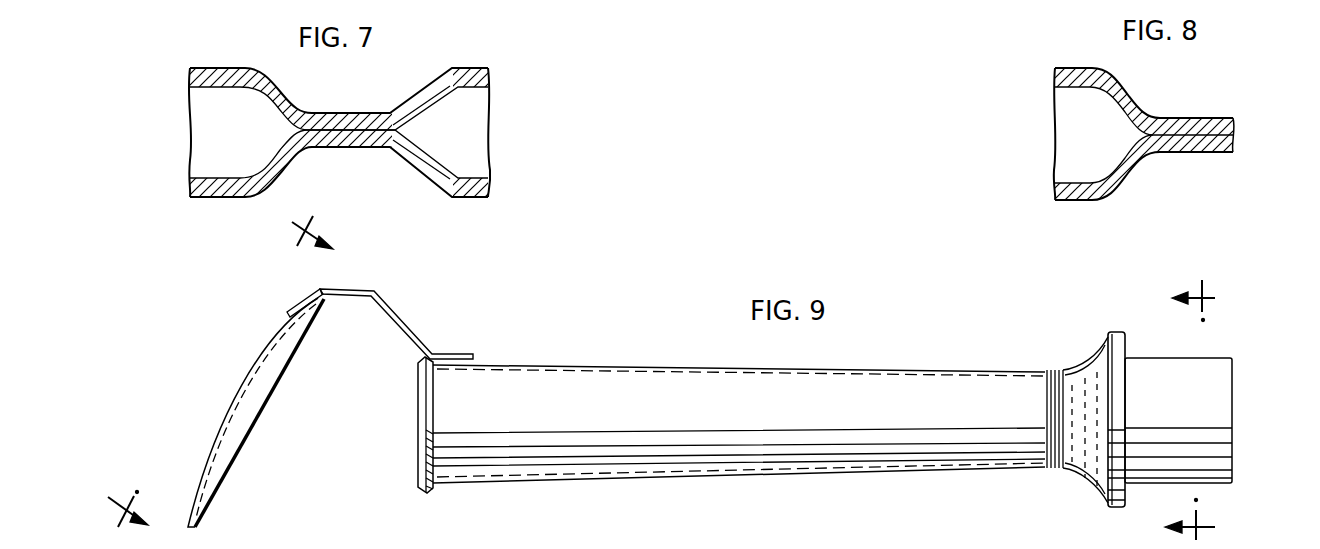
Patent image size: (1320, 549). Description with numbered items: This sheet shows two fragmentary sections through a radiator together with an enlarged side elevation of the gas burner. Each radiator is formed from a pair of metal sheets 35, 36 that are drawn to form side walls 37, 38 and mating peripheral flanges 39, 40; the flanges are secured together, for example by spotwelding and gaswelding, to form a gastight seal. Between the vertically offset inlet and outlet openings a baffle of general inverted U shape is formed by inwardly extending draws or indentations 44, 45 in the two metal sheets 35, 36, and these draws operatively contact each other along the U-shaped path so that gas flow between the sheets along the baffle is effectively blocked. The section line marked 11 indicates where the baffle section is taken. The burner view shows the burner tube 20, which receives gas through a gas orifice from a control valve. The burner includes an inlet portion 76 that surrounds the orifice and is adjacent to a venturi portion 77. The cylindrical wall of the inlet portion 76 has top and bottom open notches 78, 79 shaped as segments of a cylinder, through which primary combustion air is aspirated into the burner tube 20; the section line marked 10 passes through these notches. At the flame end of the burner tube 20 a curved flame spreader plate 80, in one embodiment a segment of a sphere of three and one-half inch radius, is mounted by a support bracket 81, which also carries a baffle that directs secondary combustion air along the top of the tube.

In FIG. 9, the burner tube 20 is at (781, 460).
In FIG. 7, the metal sheet 35 is at (470, 68).
In FIG. 8, the metal sheet 35 is at (1078, 68).
In FIG. 7, the metal sheet 36 is at (462, 190).
In FIG. 8, the metal sheet 36 is at (1070, 200).
In FIG. 8, the side wall 37 is at (1125, 90).
In FIG. 8, the side wall 38 is at (1134, 170).
In FIG. 8, the peripheral flange 39 is at (1205, 118).
In FIG. 8, the peripheral flange 40 is at (1208, 152).
In FIG. 7, the inwardly extending draw 44 is at (341, 117).
In FIG. 7, the inwardly extending draw 45 is at (343, 148).
In FIG. 9, the inlet portion 76 is at (1213, 413).
In FIG. 9, the venturi portion 77 is at (955, 390).
In FIG. 9, the top open notch 78 is at (1182, 358).
In FIG. 9, the bottom open notch 79 is at (1170, 486).
In FIG. 9, the flame spreader plate 80 is at (260, 345).
In FIG. 9, the support bracket 81 is at (405, 323).
In FIG. 9, the section line 10- 10 is at (1209, 411).
In FIG. 7, the section line 11- 11 is at (301, 228).
In FIG. 9, the section line 11- 11 is at (113, 507).